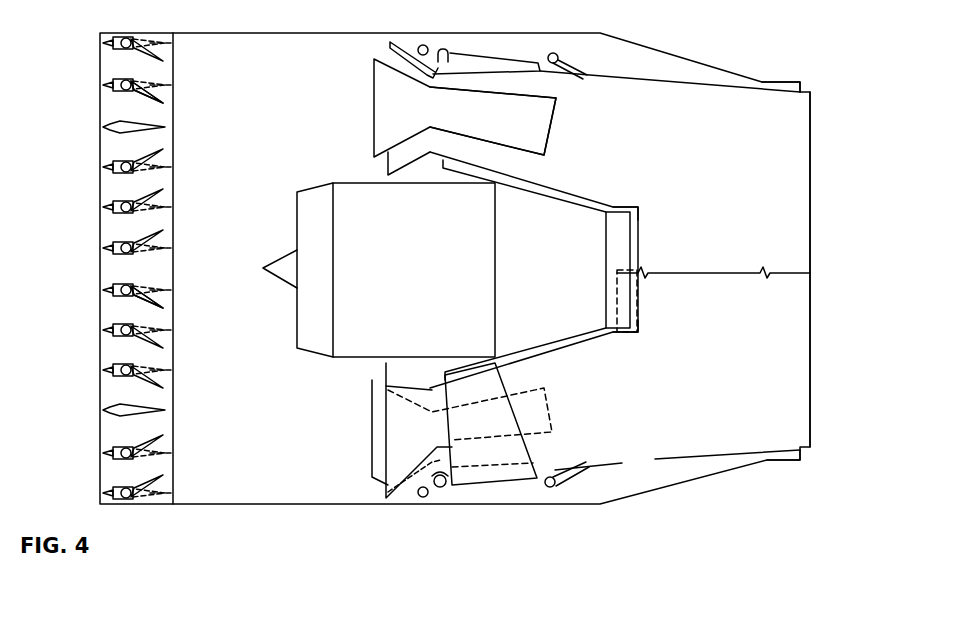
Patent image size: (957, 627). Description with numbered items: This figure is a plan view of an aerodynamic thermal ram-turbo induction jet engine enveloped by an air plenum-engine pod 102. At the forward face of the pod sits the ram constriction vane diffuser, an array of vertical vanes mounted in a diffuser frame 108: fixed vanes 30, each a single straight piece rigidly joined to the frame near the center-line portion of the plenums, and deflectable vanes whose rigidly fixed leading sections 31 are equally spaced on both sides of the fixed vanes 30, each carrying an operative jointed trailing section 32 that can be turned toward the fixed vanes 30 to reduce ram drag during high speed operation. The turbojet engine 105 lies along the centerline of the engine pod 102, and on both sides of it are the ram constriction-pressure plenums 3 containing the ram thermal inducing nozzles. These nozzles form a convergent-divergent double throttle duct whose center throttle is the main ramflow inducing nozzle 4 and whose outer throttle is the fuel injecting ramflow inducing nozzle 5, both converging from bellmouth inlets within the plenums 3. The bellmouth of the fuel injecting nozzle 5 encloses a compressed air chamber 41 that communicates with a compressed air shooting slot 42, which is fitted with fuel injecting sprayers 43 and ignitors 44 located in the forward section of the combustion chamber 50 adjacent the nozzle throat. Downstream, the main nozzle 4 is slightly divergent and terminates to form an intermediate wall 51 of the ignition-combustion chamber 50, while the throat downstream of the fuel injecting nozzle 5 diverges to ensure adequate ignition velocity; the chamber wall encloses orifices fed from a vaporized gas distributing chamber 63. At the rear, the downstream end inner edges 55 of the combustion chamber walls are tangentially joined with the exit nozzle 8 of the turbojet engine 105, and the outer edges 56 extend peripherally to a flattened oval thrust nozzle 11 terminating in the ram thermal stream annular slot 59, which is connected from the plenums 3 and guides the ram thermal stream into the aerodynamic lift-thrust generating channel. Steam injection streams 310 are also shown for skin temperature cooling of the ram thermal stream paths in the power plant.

The ram constriction-pressure plenum 3 is at (418, 279).
The main ramflow inducing nozzle 4 is at (464, 272).
The fuel injecting ramflow inducing nozzle 5 is at (388, 47).
The exit nozzle 8 is at (521, 271).
The oval thrust nozzle 11 is at (811, 233).
The fixed vane 30 is at (105, 130).
The deflectable vane leading section 31 is at (105, 83).
The trailing section of vane 32 is at (163, 99).
The compressed air chamber 41 is at (413, 57).
The compressed air shooting slot 42 is at (455, 68).
The fuel injecting sprayer 43 is at (418, 497).
The ignitor 44 is at (442, 489).
The combustion chamber 50 is at (490, 82).
The intermediate wall 51 is at (528, 118).
The downstream end inner edge 55 is at (620, 200).
The outer edge of combustion chamber wall 56 is at (752, 96).
The ram thermal stream annular slot 59 is at (806, 83).
The vaporized gas distributing chamber 63 is at (512, 486).
The air plenum-engine pod 102 is at (276, 506).
The turbojet engine 105 is at (379, 270).
The diffuser frame 108 is at (106, 218).
The steam injection stream 310 is at (574, 56).